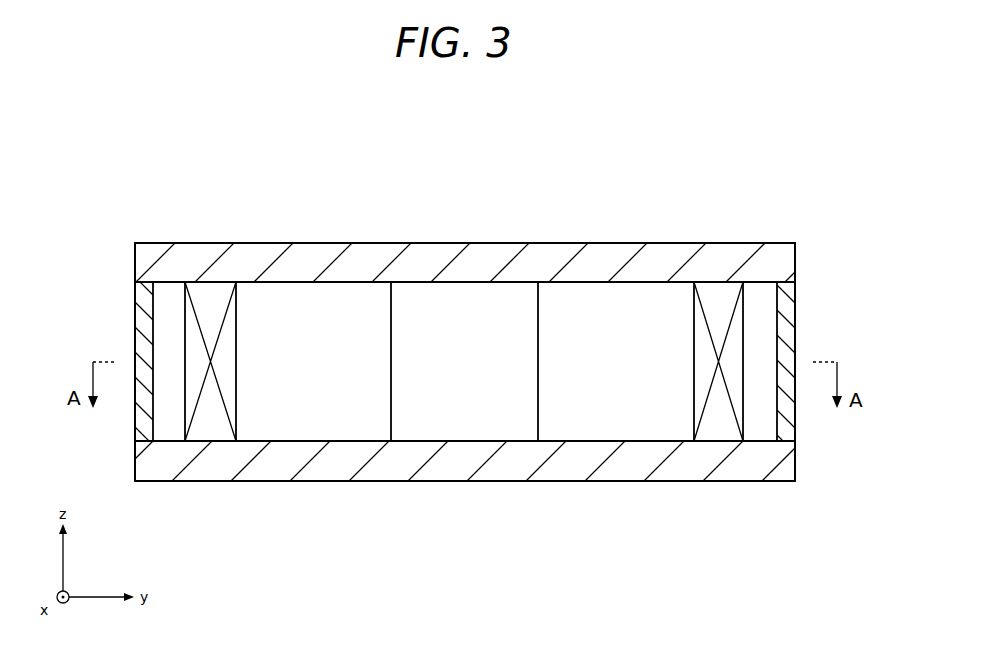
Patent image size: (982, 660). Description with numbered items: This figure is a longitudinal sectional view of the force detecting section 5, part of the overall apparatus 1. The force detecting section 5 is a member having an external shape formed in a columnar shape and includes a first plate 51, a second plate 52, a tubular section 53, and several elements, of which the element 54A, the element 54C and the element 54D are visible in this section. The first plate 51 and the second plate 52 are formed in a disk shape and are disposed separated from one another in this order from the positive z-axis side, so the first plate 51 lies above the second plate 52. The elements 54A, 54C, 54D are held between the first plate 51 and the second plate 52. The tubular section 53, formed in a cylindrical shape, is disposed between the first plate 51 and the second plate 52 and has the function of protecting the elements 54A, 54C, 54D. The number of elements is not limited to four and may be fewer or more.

The device 1 is at (812, 170).
The force detecting section 5 is at (622, 188).
The first plate 51 is at (797, 253).
The second plate 52 is at (795, 450).
The tubular section 53 is at (795, 345).
The element 54A is at (498, 310).
The element 54C is at (203, 297).
The element 54D is at (720, 308).